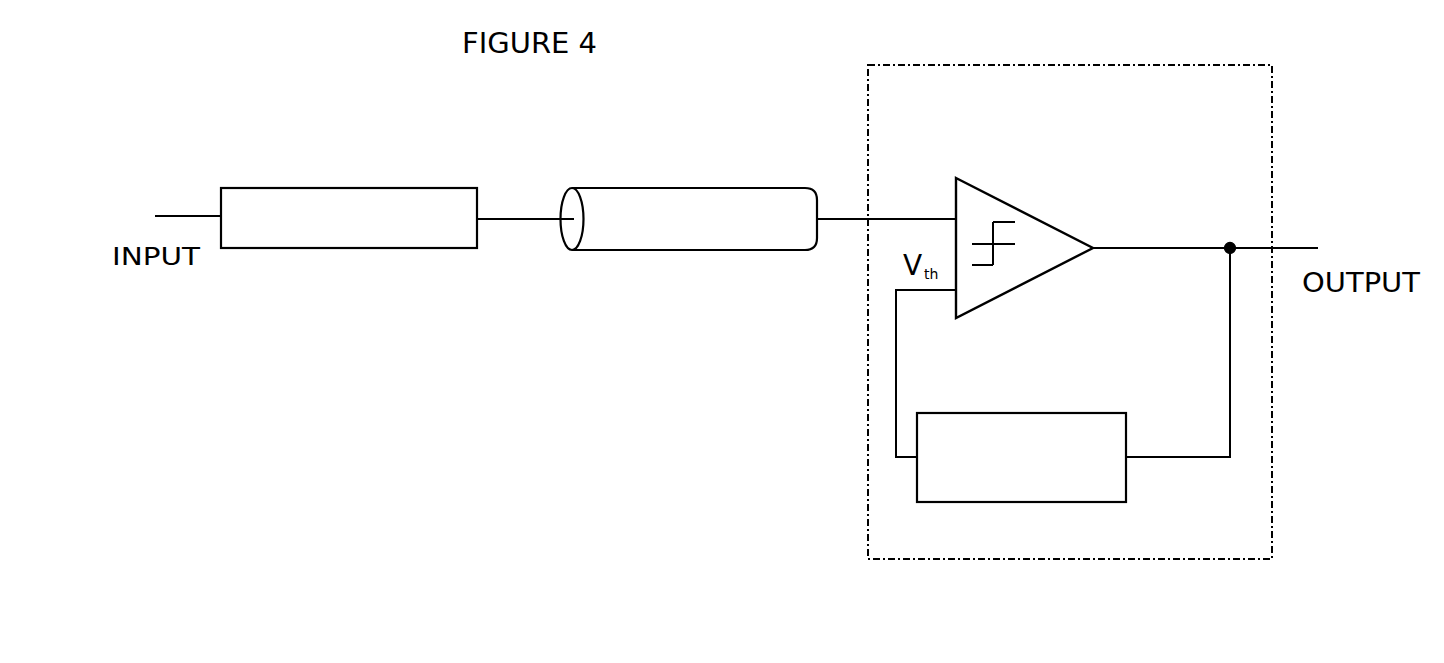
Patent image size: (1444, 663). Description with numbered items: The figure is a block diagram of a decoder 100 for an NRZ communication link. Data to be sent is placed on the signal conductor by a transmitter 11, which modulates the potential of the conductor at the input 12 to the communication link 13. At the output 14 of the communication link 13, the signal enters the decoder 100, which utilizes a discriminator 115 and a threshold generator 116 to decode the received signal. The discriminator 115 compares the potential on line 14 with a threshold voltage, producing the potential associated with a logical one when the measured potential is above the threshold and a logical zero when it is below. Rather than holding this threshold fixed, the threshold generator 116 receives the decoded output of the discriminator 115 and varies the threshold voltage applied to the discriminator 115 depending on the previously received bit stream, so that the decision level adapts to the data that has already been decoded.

The transmitter 11 is at (377, 250).
The input 12 is at (497, 221).
The communication link 13 is at (652, 242).
The output of communication link 14 is at (830, 219).
The decoder 100 is at (1215, 66).
The discriminator 115 is at (1033, 225).
The threshold generator 116 is at (1072, 413).